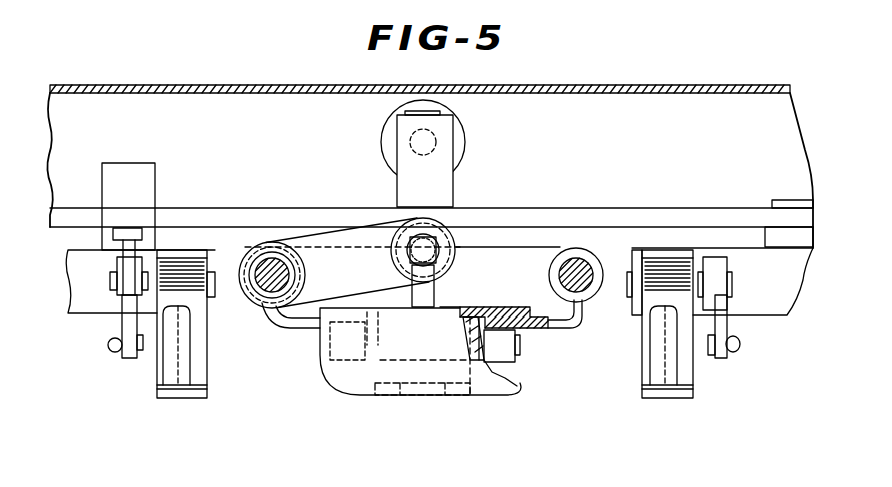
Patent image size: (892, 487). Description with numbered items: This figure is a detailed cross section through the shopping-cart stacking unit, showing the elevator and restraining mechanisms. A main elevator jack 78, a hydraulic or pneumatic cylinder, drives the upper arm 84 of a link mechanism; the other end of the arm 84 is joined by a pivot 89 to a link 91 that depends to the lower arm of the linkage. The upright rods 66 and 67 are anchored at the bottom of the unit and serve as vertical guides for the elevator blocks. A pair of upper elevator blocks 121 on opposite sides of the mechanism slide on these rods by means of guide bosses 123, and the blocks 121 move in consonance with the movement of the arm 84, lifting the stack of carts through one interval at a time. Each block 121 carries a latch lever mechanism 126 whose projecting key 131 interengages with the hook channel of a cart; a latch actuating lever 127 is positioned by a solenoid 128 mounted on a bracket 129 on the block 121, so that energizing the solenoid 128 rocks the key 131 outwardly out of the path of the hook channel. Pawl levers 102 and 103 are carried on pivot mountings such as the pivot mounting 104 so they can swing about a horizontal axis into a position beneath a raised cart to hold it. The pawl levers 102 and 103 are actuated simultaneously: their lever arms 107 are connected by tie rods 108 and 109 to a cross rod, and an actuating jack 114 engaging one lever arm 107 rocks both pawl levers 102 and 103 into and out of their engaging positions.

The main elevator jack 78 is at (459, 148).
The upper arm 84 is at (246, 192).
The pivot 89 is at (790, 202).
The link 91 is at (772, 238).
The actuating jack 114 is at (134, 198).
The bracket 129 is at (338, 230).
The upper elevator block 121 is at (513, 252).
The guide boss 123 is at (293, 280).
The solenoid 128 is at (443, 262).
The latch actuating lever 127 is at (440, 300).
The upright rod 66 is at (268, 284).
The upright rod 67 is at (588, 292).
The latch lever mechanism 126 is at (330, 386).
The projecting key 131 is at (412, 394).
The pawl lever 102 is at (163, 395).
The pawl lever 103 is at (645, 389).
The pivot mounting 104 is at (112, 280).
The lever arm 107 is at (125, 327).
The tie rod 108 is at (110, 350).
The tie rod 109 is at (741, 344).